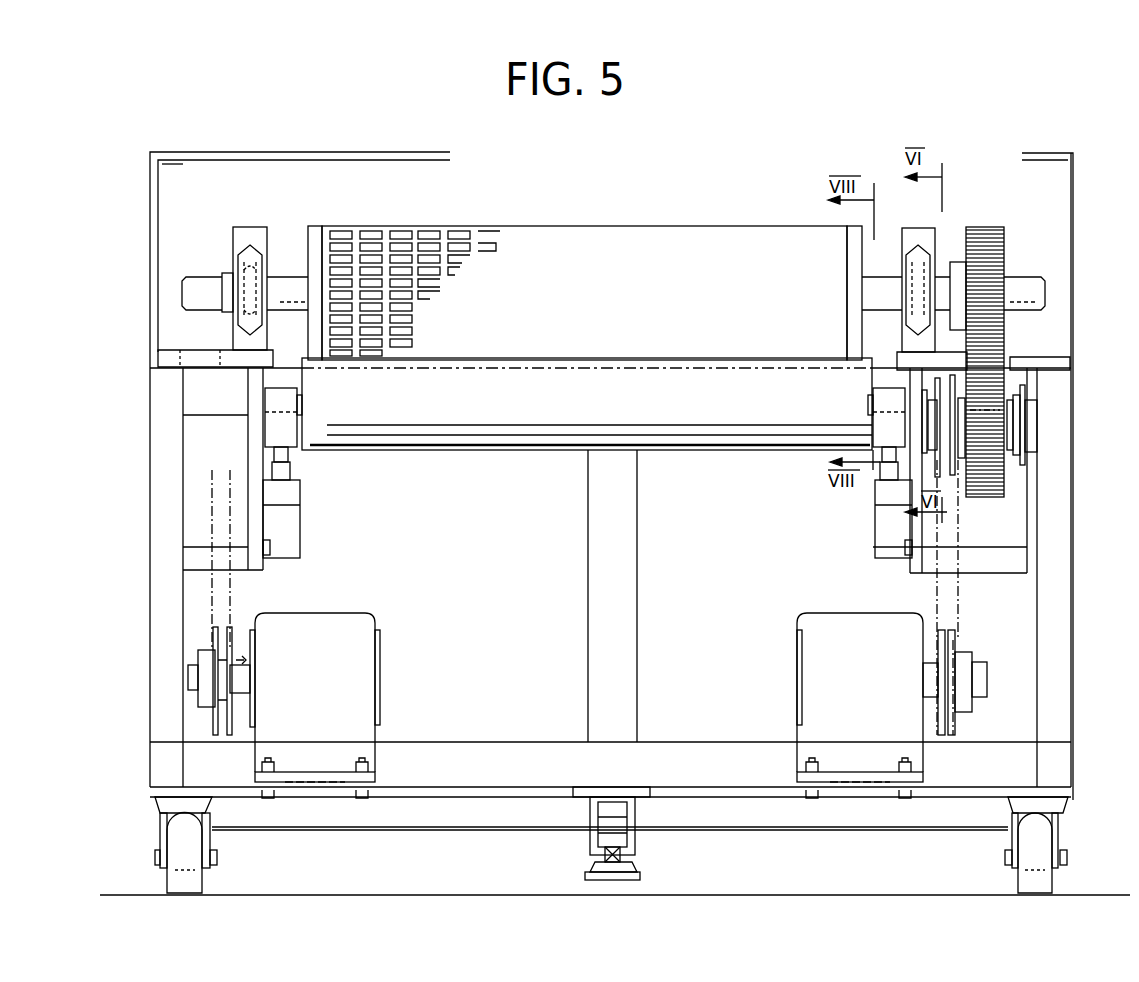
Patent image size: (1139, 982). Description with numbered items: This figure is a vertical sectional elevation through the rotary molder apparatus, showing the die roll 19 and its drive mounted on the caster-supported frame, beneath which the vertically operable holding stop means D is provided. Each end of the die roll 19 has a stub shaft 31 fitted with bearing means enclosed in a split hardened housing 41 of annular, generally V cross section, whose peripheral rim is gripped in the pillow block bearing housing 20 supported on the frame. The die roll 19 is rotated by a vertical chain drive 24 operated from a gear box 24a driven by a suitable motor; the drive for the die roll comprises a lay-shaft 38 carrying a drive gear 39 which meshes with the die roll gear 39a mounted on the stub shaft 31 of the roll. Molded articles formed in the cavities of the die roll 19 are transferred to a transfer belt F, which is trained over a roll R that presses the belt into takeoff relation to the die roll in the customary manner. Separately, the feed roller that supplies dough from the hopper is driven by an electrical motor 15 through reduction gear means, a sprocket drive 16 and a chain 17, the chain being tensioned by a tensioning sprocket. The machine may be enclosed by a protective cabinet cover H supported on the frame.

The housing H is at (150, 218).
The die roll 19 is at (797, 238).
The bearing housing 20 is at (243, 238).
The stub shaft 31 is at (210, 283).
The split hardened housing 41 is at (258, 262).
The die roll gear 39a is at (1000, 238).
The lay-shaft 38 is at (990, 445).
The drive gear 39 is at (985, 478).
The transfer belt F is at (520, 452).
The roll R is at (290, 442).
The electrical motor 15 is at (378, 732).
The sprocket drive 16 is at (215, 658).
The chain 17 is at (212, 612).
The gear box 24a is at (805, 624).
The vertical chain drive 24 is at (958, 597).
The holding stop means D is at (639, 835).